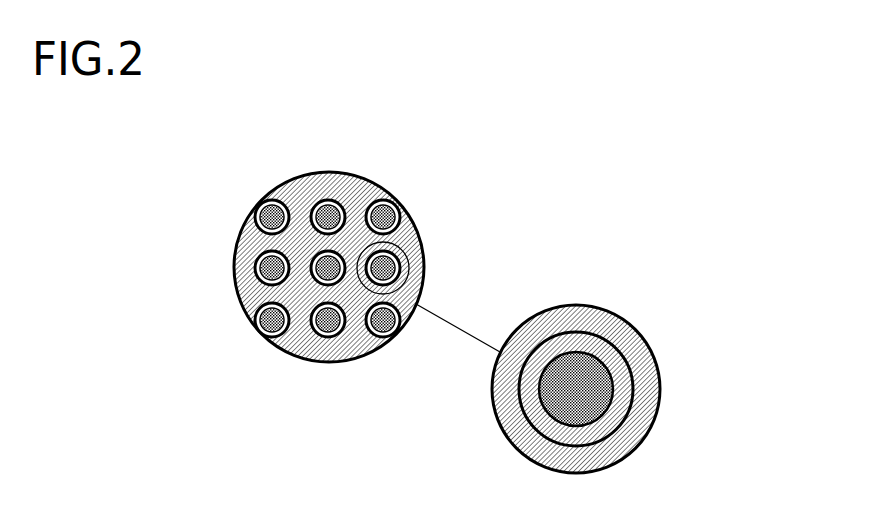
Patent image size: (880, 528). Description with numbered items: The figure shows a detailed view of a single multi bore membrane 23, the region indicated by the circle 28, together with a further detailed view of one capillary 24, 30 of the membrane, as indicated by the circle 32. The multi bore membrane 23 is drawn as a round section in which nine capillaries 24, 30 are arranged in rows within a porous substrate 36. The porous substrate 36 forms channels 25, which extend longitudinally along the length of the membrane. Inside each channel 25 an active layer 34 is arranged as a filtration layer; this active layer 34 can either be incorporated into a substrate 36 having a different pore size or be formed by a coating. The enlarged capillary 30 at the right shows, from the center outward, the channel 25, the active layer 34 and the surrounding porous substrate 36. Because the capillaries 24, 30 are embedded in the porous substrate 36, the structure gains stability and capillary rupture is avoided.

The multi bore membrane 23 is at (250, 290).
The capillary 24 is at (310, 203).
The channel 25 is at (382, 217).
The circle 28 is at (353, 172).
The capillary 30 is at (325, 342).
The circle 32 is at (420, 243).
The active layer 34 is at (373, 338).
The porous substrate 36 is at (412, 320).